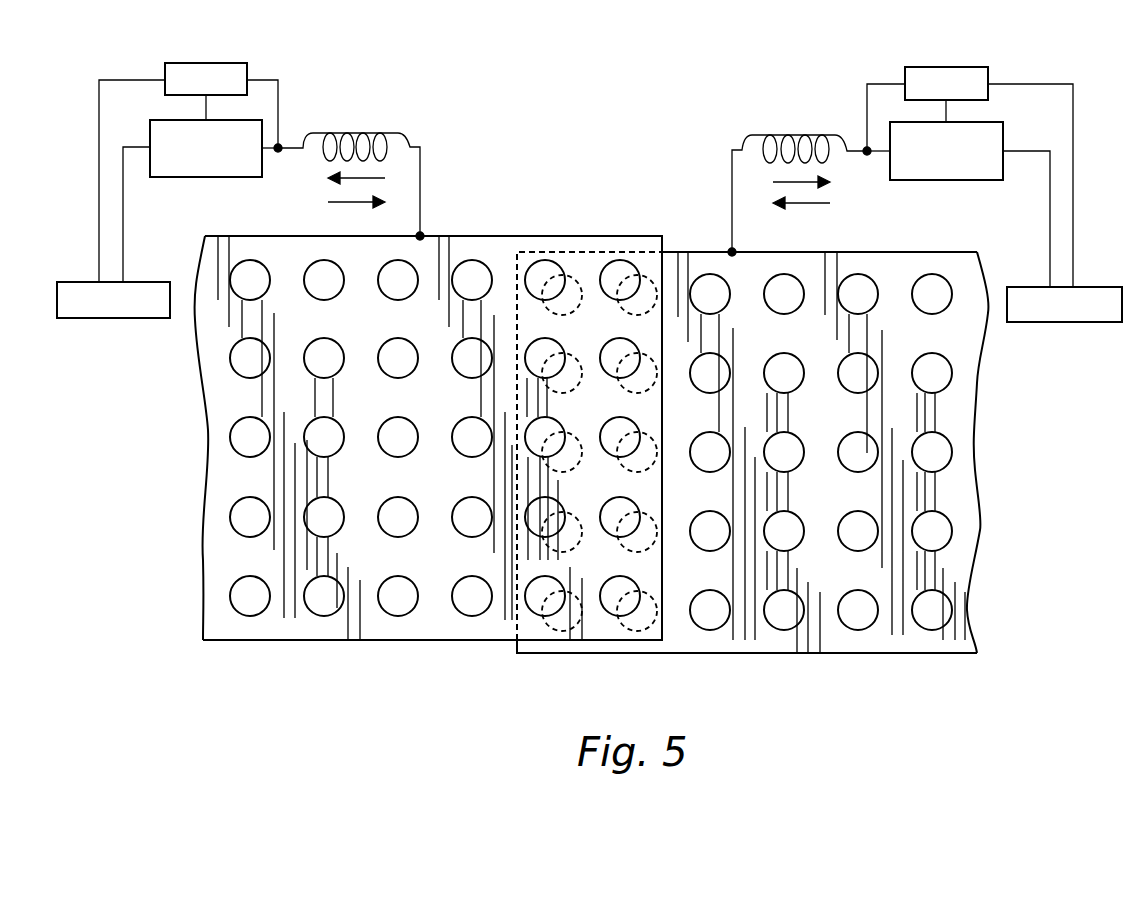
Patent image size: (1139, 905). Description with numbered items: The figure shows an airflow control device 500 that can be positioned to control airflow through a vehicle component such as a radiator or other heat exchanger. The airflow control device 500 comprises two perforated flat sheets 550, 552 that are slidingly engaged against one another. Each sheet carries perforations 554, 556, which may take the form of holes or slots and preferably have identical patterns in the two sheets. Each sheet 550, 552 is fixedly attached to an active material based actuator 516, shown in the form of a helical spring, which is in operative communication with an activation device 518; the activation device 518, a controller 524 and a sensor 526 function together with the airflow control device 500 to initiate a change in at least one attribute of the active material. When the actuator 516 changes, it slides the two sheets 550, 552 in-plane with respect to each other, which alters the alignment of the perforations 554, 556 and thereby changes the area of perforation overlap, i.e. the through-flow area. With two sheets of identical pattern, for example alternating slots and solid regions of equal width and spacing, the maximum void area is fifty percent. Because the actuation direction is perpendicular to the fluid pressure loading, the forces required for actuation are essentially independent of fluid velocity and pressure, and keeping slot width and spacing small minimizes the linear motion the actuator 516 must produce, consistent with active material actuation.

The airflow control device 500 is at (582, 137).
The active material based actuator 516 is at (355, 133).
The activation device 518 is at (212, 177).
The controller 524 is at (130, 318).
The sensor 526 is at (220, 63).
The perforated flat sheet 550 is at (922, 493).
The perforated flat sheet 552 is at (277, 403).
The perforations 554 is at (250, 616).
The perforations 556 is at (645, 627).